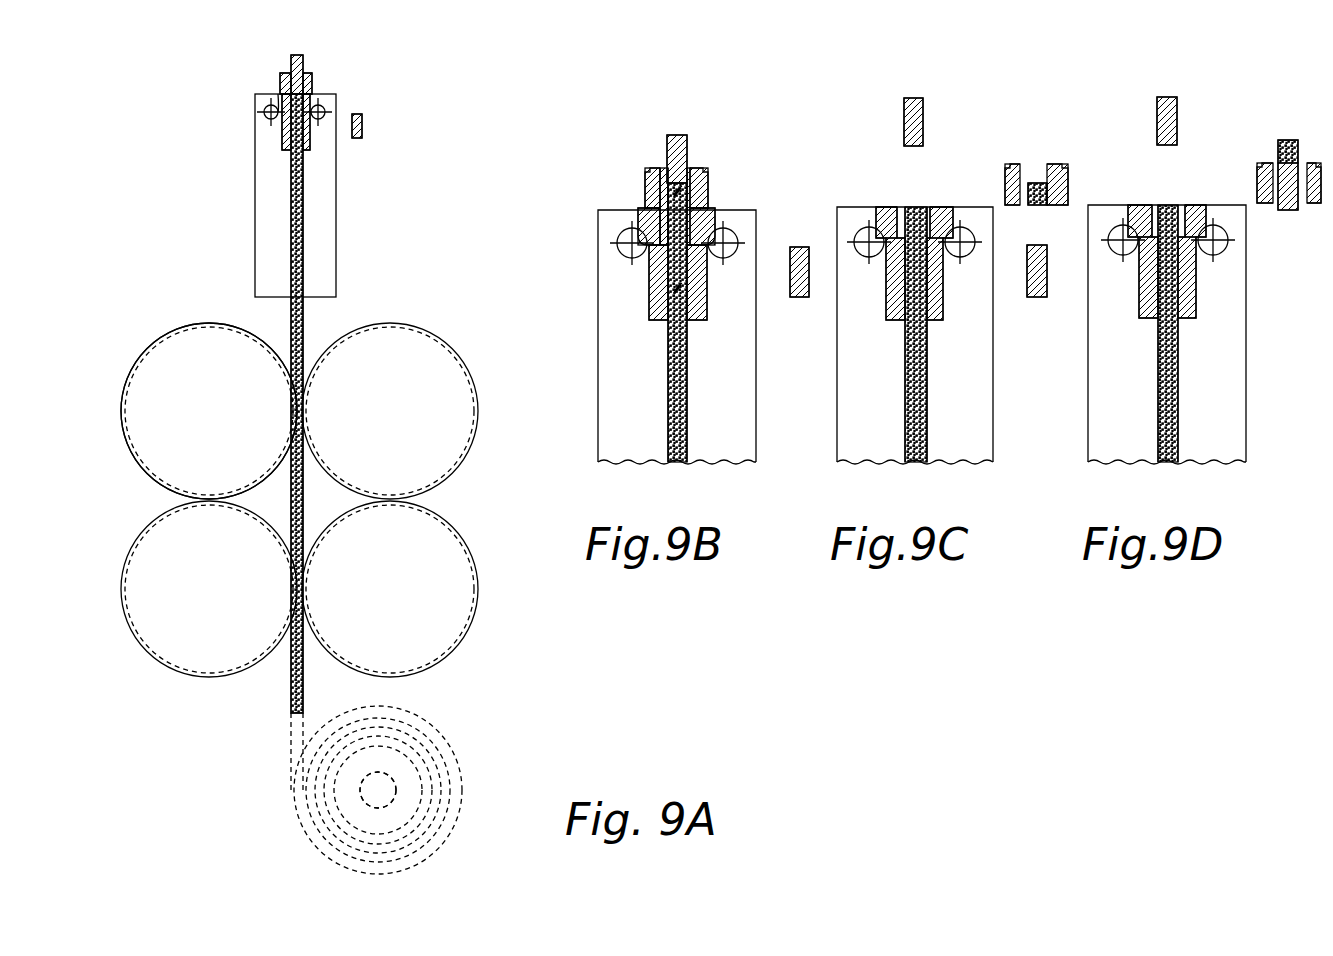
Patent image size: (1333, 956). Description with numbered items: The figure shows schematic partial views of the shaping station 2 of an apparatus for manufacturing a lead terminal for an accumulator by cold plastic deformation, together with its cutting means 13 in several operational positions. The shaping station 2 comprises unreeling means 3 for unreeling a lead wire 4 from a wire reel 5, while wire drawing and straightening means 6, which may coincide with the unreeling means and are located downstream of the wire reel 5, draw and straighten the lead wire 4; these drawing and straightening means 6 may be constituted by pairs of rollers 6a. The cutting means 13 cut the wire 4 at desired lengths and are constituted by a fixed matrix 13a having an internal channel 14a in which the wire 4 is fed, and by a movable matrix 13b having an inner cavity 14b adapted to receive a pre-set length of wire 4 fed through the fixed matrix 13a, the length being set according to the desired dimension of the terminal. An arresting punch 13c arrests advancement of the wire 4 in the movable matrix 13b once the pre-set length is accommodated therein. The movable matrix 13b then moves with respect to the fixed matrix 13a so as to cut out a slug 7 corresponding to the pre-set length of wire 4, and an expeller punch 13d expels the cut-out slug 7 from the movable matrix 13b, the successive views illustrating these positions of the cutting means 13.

In FIG. 9A, the shaping station 2 is at (422, 243).
In FIG. 9B, the shaping station 2 is at (677, 322).
In FIG. 9C, the shaping station 2 is at (916, 334).
In FIG. 9D, the shaping station 2 is at (1168, 333).
In FIG. 9A, the unreeling means 3 is at (308, 818).
In FIG. 9A, the lead wire 4 is at (291, 697).
In FIG. 9A, the wire reel 5 is at (378, 790).
In FIG. 9A, the wire drawing and straightening means 6 is at (440, 332).
In FIG. 9A, the rollers 6a is at (172, 357).
In FIG. 9C, the slug 7 is at (1029, 178).
In FIG. 9A, the cutting means 13 is at (324, 75).
In FIG. 9B, the cutting means 13 is at (710, 156).
In FIG. 9C, the cutting means 13 is at (1068, 158).
In FIG. 9D, the cutting means 13 is at (1312, 144).
In FIG. 9A, the fixed matrix 13a is at (268, 100).
In FIG. 9B, the fixed matrix 13a is at (645, 200).
In FIG. 9C, the fixed matrix 13a is at (880, 207).
In FIG. 9D, the fixed matrix 13a is at (1136, 205).
In FIG. 9A, the movable matrix 13b is at (273, 82).
In FIG. 9B, the movable matrix 13b is at (705, 180).
In FIG. 9C, the movable matrix 13b is at (1010, 177).
In FIG. 9D, the movable matrix 13b is at (1263, 183).
In FIG. 9A, the arresting punch 13c is at (291, 62).
In FIG. 9B, the arresting punch 13c is at (678, 135).
In FIG. 9C, the arresting punch 13c is at (904, 109).
In FIG. 9D, the arresting punch 13c is at (1168, 97).
In FIG. 9A, the expeller punch 13d is at (362, 116).
In FIG. 9B, the expeller punch 13d is at (800, 297).
In FIG. 9C, the expeller punch 13d is at (1032, 297).
In FIG. 9D, the expeller punch 13d is at (1285, 210).
In FIG. 9B, the internal channel 14a is at (650, 326).
In FIG. 9B, the inner cavity 14b is at (638, 222).